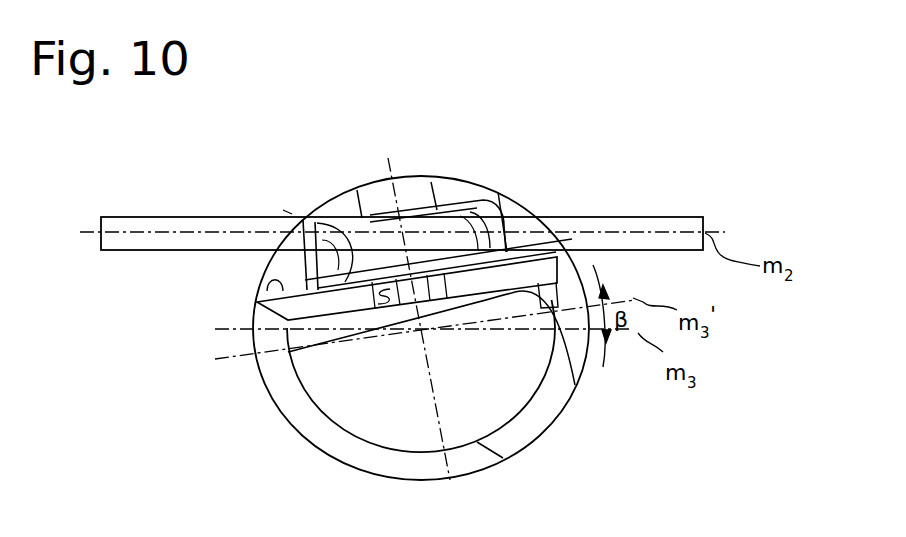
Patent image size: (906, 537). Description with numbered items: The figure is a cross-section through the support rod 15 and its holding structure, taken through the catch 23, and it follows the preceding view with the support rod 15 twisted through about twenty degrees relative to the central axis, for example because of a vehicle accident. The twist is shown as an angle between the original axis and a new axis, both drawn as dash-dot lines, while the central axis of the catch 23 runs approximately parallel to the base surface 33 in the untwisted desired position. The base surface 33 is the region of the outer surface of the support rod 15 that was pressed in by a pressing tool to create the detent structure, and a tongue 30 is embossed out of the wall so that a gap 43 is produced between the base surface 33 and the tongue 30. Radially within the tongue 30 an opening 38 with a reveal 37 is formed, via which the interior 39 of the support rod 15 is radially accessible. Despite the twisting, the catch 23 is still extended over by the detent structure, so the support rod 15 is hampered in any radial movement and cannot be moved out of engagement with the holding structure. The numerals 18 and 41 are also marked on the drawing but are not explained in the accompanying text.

The support rod 15 is at (330, 445).
The roller 18 is at (480, 240).
The catch 23 is at (641, 228).
The tongue 30 is at (358, 191).
The base surface 33 is at (267, 273).
The reveal 37 is at (290, 330).
The opening 38 is at (441, 290).
The interior 39 is at (506, 382).
The carriage 41 is at (420, 192).
The gap 43 is at (292, 213).